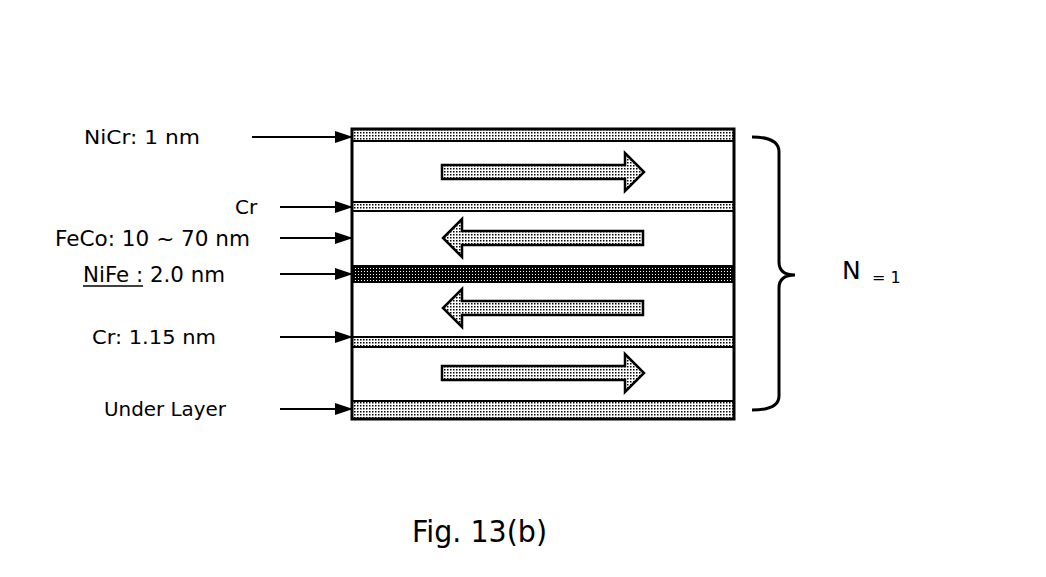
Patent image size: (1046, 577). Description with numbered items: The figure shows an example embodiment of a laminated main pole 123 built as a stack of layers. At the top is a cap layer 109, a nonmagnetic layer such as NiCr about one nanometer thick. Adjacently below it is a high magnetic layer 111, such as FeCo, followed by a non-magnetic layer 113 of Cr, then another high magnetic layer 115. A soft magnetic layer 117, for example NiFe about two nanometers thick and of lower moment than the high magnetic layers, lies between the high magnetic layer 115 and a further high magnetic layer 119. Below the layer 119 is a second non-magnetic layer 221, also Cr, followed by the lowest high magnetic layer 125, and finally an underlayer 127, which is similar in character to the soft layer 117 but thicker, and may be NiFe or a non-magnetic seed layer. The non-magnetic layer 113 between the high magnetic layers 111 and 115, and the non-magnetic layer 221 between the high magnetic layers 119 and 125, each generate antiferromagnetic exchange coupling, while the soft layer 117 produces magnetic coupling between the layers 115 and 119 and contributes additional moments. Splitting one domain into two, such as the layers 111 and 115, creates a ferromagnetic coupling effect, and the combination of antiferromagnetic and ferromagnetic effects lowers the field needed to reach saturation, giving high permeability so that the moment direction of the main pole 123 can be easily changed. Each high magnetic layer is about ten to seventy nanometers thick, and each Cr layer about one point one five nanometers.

The cap layer 109 is at (735, 130).
The high magnetic layer 111 is at (735, 168).
The non-magnetic layer 113 is at (735, 200).
The high magnetic layer 115 is at (735, 233).
The soft magnetic layer 117 is at (735, 270).
The high magnetic layer 119 is at (735, 305).
The main pole 123 is at (772, 77).
The high magnetic layer 125 is at (735, 365).
The underlayer 127 is at (700, 421).
The non-magnetic layer 221 is at (333, 342).